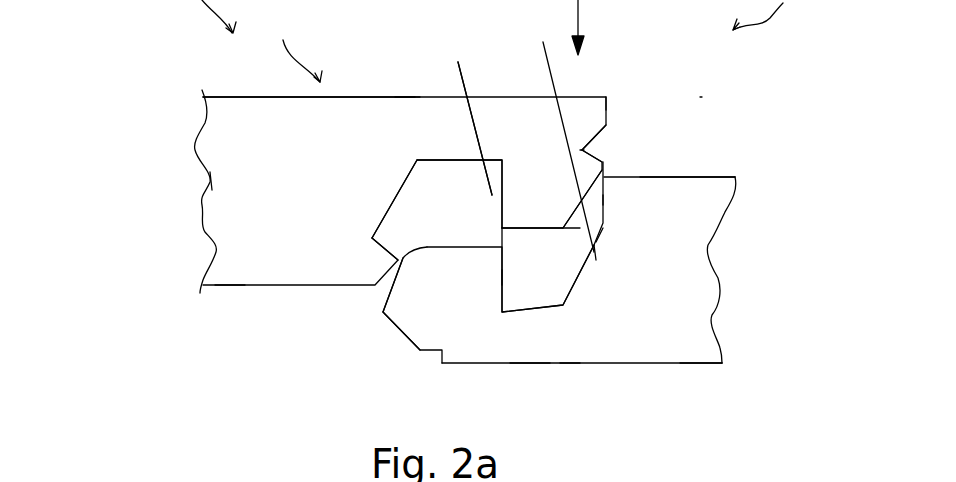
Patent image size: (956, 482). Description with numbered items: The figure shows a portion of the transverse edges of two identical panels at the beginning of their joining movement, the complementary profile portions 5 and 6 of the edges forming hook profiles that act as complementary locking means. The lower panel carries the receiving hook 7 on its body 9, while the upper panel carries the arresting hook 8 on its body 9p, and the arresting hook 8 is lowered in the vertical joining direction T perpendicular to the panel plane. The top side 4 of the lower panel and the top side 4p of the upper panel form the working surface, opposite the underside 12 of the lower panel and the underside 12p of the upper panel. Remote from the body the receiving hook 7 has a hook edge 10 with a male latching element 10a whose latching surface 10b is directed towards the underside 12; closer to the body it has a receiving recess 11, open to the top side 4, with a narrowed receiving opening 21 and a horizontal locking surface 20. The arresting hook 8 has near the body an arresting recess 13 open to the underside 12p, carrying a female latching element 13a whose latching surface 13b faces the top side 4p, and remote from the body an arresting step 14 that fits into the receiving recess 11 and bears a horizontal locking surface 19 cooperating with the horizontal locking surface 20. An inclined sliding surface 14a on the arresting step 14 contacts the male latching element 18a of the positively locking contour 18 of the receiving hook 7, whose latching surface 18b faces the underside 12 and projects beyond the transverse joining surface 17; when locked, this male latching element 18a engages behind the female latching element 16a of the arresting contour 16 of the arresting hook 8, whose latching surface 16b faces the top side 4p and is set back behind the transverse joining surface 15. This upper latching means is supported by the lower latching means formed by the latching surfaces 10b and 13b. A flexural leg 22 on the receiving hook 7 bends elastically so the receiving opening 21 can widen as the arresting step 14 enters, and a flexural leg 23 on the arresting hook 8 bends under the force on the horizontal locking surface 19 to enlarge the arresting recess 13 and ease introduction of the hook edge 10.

The top side 4 is at (703, 176).
The top side 4p is at (233, 97).
The profile portion 5 is at (700, 367).
The profile portion 6 is at (299, 47).
The receiving hook 7 is at (676, 350).
The arresting hook 8 is at (286, 131).
The body 9 is at (705, 226).
The body 9p is at (210, 180).
The hook edge 10 is at (438, 305).
The male latching element 10a is at (385, 312).
The latching surface 10b is at (391, 337).
The receiving recess 11 is at (536, 296).
The underside 12 is at (533, 364).
The underside 12p is at (230, 286).
The arresting recess 13 is at (445, 191).
The female latching element 13a is at (383, 218).
The latching surface 13b is at (406, 199).
The arresting step 14 is at (525, 218).
The inclined sliding surface 14a is at (583, 196).
The transverse joining surface 15 is at (609, 103).
The arresting contour 16 is at (730, 102).
The female latching element 16a is at (592, 138).
The latching surface 16b is at (600, 160).
The transverse joining surface 17 is at (601, 225).
The positively locking contour 18 is at (574, 234).
The male latching element 18a is at (598, 237).
The latching surface 18b is at (597, 253).
The horizontal locking surface 19 is at (497, 195).
The horizontal locking surface 20 is at (505, 277).
The receiving opening 21 is at (460, 77).
The flexural leg 22 is at (567, 353).
The flexural leg 23 is at (403, 107).